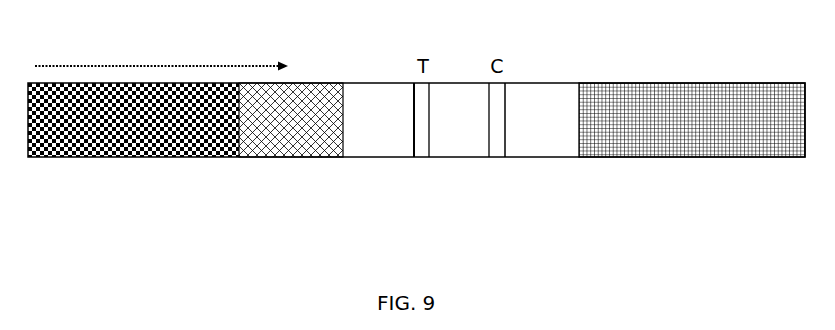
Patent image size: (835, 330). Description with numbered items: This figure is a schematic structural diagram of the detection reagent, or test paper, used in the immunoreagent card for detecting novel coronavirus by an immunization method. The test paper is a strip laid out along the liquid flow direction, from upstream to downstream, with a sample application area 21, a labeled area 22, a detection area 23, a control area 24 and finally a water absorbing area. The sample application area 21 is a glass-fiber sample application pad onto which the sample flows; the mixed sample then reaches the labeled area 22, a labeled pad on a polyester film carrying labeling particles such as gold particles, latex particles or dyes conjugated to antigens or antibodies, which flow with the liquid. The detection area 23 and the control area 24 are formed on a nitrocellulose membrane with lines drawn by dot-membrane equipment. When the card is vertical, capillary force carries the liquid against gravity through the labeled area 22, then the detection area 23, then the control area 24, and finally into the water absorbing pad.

The sample application area 21 is at (147, 160).
The labeled area 22 is at (315, 158).
The detection area 23 is at (423, 130).
The control area 24 is at (497, 101).